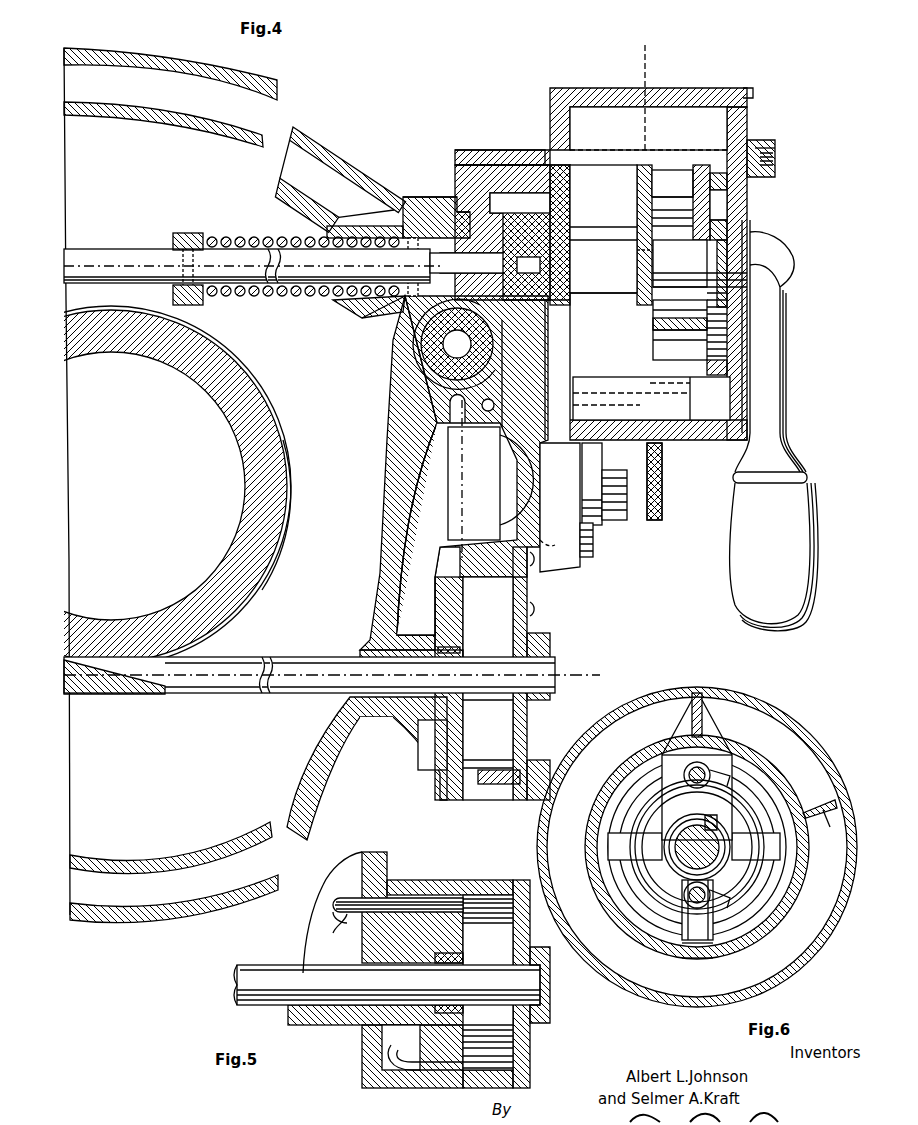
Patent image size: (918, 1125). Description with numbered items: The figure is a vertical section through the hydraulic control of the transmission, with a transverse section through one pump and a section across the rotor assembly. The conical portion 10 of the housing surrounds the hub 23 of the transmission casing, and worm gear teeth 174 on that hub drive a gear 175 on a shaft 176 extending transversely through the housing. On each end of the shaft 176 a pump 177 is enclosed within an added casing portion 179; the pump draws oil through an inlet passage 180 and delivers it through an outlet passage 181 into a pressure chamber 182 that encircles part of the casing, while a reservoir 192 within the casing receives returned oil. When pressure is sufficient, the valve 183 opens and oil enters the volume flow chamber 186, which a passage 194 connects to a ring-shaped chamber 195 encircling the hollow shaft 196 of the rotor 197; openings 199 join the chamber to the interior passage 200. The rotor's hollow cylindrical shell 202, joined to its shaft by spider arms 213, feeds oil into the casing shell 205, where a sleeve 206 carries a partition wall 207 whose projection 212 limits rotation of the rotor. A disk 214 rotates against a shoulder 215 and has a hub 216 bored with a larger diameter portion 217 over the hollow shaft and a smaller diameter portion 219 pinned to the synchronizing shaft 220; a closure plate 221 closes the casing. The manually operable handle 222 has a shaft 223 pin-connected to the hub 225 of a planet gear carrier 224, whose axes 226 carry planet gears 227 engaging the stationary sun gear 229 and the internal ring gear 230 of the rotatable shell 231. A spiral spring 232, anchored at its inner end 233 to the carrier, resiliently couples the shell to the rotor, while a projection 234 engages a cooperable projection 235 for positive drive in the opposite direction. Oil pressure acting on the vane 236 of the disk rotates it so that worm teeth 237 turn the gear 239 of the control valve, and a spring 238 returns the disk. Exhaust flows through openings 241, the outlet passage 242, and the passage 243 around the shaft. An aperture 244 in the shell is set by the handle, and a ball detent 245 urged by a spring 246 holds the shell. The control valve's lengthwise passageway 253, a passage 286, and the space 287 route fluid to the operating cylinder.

In FIG. 4, the conical portion of the housing 10 is at (180, 853).
In FIG. 5, the conical portion of the housing 10 is at (387, 865).
In FIG. 4, the hub of the transmission casing 23 is at (232, 375).
In FIG. 4, the worm gear teeth 174 is at (288, 515).
In FIG. 4, the gear 175 is at (150, 690).
In FIG. 4, the shaft 176 is at (222, 690).
In FIG. 5, the shaft 176 is at (387, 951).
In FIG. 4, the pump 177 is at (488, 600).
In FIG. 5, the pump 177 is at (510, 962).
In FIG. 6, the pump 177 is at (582, 998).
In FIG. 4, the added casing portion 179 is at (478, 777).
In FIG. 5, the added casing portion 179 is at (485, 895).
In FIG. 5, the inlet passage 180 is at (333, 928).
In FIG. 5, the outlet passage 181 is at (428, 1072).
In FIG. 4, the pressure chamber 182 is at (232, 88).
In FIG. 5, the pressure chamber 182 is at (390, 1037).
In FIG. 4, the valve 183 is at (490, 478).
In FIG. 4, the volume flow chamber 186 is at (601, 500).
In FIG. 4, the reservoir 192 is at (430, 465).
In FIG. 4, the passage 194 is at (476, 432).
In FIG. 4, the ring-shaped chamber 195 is at (525, 200).
In FIG. 4, the hollow shaft 196 is at (545, 255).
In FIG. 4, the rotor 197 is at (603, 229).
In FIG. 4, the openings 199 is at (546, 269).
In FIG. 4, the interior passage 200 is at (603, 278).
In FIG. 6, the hollow cylindrical shell 202 is at (640, 770).
In FIG. 4, the casing shell 205 is at (625, 95).
In FIG. 4, the sleeve 206 is at (606, 404).
In FIG. 4, the partition wall 207 is at (605, 98).
In FIG. 6, the partition wall 207 is at (707, 695).
In FIG. 4, the projection 212 is at (612, 160).
In FIG. 4, the spider arms 213 is at (622, 372).
In FIG. 6, the spider arms 213 is at (622, 860).
In FIG. 4, the disk 214 is at (578, 100).
In FIG. 6, the disk 214 is at (790, 955).
In FIG. 4, the shoulder 215 is at (560, 507).
In FIG. 4, the hub 216 is at (430, 197).
In FIG. 4, the larger diameter portion 217 is at (515, 205).
In FIG. 4, the smaller diameter portion 219 is at (380, 305).
In FIG. 4, the shaft 220 is at (125, 252).
In FIG. 4, the closure plate 221 is at (410, 215).
In FIG. 4, the manually operable handle 222 is at (740, 583).
In FIG. 4, the shaft 223 is at (760, 262).
In FIG. 4, the planet gear carrier 224 is at (702, 165).
In FIG. 4, the hub 225 is at (700, 260).
In FIG. 4, the axes 226 is at (740, 197).
In FIG. 4, the planet gears 227 is at (728, 182).
In FIG. 4, the sun gear 229 is at (726, 273).
In FIG. 4, the internal ring gear 230 is at (730, 366).
In FIG. 4, the rotatable shell 231 is at (672, 170).
In FIG. 6, the rotatable shell 231 is at (780, 888).
In FIG. 6, the spiral spring 232 is at (760, 890).
In FIG. 4, the inner end of spring 233 is at (700, 320).
In FIG. 6, the inner end of spring 233 is at (690, 905).
In FIG. 4, the projection 234 is at (648, 237).
In FIG. 6, the projection 234 is at (660, 800).
In FIG. 4, the cooperable projection 235 is at (650, 257).
In FIG. 6, the cooperable projection 235 is at (770, 810).
In FIG. 6, the vane 236 is at (830, 798).
In FIG. 4, the worm teeth 237 is at (462, 212).
In FIG. 4, the spring 238 is at (215, 236).
In FIG. 6, the spring 238 is at (688, 765).
In FIG. 4, the gear 239 is at (415, 353).
In FIG. 4, the openings 241 is at (570, 178).
In FIG. 6, the openings 241 is at (620, 815).
In FIG. 4, the outlet passage 242 is at (500, 150).
In FIG. 4, the passage 243 is at (343, 226).
In FIG. 4, the aperture 244 is at (695, 375).
In FIG. 6, the aperture 244 is at (700, 950).
In FIG. 4, the ball detent 245 is at (755, 145).
In FIG. 4, the spring 246 is at (775, 155).
In FIG. 4, the passageway 253 is at (440, 393).
In FIG. 4, the passage 286 is at (470, 403).
In FIG. 4, the space 287 is at (447, 443).